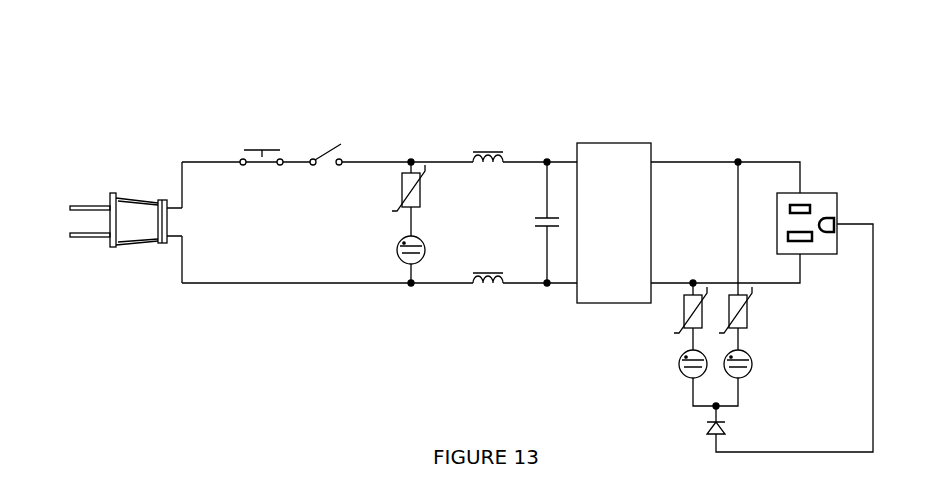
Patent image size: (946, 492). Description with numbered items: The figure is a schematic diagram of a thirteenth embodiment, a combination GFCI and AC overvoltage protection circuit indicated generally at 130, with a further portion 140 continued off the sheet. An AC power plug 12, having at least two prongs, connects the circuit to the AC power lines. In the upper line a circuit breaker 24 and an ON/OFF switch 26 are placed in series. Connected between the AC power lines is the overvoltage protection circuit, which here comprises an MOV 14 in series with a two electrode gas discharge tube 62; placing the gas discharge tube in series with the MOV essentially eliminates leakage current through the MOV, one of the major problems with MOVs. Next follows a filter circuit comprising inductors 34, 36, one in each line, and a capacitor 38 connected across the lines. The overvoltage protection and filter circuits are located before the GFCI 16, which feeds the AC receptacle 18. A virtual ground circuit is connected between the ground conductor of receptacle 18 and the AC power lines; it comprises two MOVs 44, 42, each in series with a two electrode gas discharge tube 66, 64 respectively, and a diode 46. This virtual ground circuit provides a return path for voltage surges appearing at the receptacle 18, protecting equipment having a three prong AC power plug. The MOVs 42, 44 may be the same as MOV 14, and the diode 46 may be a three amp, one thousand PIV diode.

The surge protection circuit 130 is at (378, 86).
The additional circuit portion 140 is at (368, 491).
The AC power plug 12 is at (138, 243).
The circuit breaker 24 is at (260, 146).
The ON/OFF switch 26 is at (328, 150).
The MOV 14 is at (420, 190).
The two electrode gas discharge tube 62 is at (398, 240).
The inductor 34 is at (493, 148).
The inductor 36 is at (483, 273).
The capacitor 38 is at (537, 218).
The GFCI 16 is at (622, 234).
The AC receptacle 18 is at (838, 193).
The MOV 44 is at (668, 318).
The MOV 42 is at (748, 312).
The two electrode gas discharge tube 66 is at (681, 373).
The two electrode gas discharge tube 64 is at (750, 373).
The diode 46 is at (711, 431).